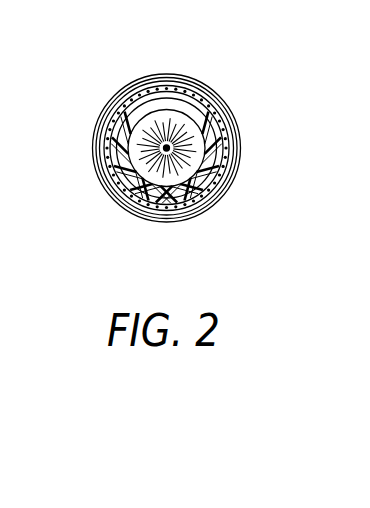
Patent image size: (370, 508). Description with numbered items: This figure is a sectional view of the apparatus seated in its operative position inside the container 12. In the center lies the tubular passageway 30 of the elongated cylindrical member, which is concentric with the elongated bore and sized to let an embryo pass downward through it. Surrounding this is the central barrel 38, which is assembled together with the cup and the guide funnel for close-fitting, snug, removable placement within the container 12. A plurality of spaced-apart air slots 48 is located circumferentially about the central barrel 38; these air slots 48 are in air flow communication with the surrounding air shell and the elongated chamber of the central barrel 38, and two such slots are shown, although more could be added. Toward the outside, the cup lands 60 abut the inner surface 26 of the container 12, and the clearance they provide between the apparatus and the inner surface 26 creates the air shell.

The container 12 is at (95, 133).
The inner surface 26 is at (172, 222).
The tubular passageway 30 is at (166, 147).
The central barrel 38 is at (232, 134).
The air slots 48 is at (122, 96).
The cup lands 60 is at (165, 84).